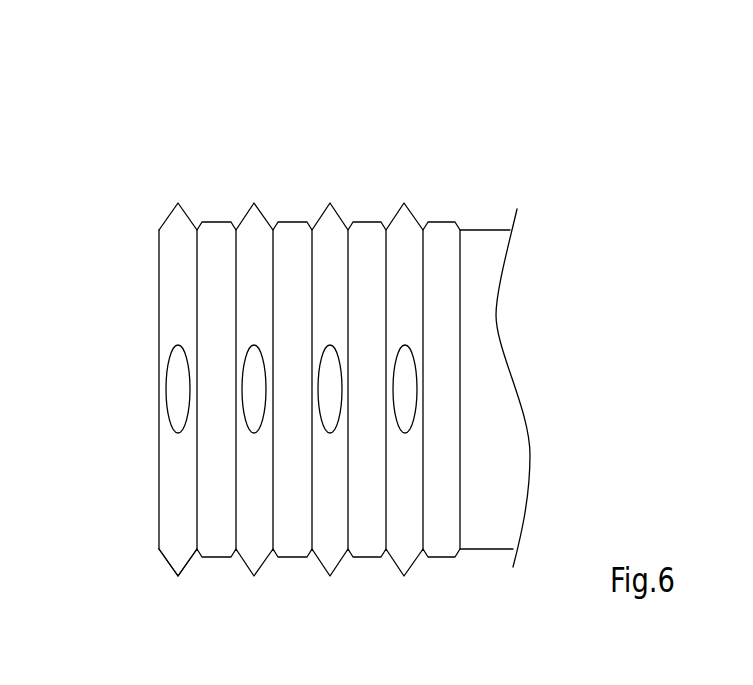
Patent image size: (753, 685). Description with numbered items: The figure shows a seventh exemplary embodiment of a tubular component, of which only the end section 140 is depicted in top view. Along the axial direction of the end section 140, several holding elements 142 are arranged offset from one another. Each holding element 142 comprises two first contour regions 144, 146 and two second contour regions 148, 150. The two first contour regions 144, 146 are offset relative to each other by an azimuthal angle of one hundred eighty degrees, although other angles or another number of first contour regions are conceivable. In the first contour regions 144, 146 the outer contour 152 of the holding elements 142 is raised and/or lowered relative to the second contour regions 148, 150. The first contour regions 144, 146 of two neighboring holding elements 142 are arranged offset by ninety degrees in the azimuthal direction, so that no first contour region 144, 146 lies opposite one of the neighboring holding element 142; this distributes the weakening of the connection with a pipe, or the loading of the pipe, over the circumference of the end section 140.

The end section 140 is at (137, 183).
The holding elements 142 is at (443, 238).
The first contour region 144 is at (218, 200).
The first contour region 146 is at (215, 570).
The second contour region 148 is at (183, 287).
The second contour region 150 is at (210, 292).
The outer contour 152 is at (168, 570).